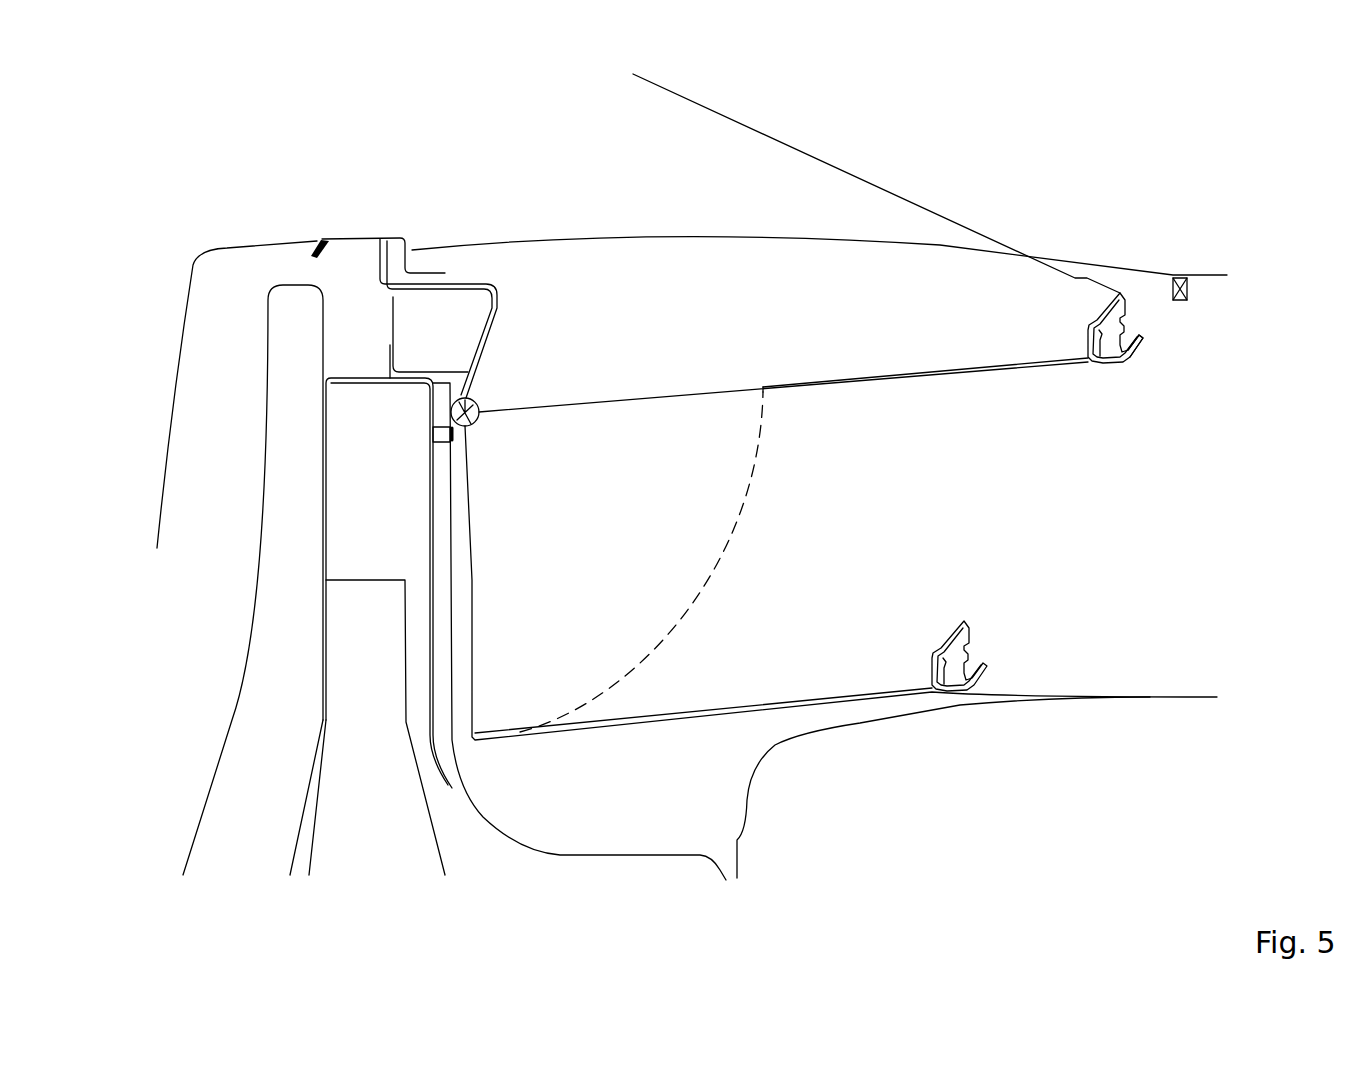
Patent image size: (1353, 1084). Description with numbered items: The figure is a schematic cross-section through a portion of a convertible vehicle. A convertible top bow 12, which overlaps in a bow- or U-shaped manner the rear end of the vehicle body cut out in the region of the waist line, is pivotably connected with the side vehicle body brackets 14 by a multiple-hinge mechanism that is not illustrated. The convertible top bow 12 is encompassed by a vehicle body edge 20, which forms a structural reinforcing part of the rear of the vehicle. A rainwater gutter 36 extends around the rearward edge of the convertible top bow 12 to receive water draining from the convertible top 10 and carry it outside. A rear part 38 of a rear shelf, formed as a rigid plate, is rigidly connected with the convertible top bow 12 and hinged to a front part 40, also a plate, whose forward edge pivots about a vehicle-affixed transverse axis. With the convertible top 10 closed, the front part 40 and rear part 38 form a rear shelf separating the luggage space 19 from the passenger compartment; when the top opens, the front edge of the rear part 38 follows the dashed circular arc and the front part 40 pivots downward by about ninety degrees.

The convertible top 10 is at (758, 132).
The convertible top bow 12 is at (1110, 335).
The side vehicle body bracket 14 is at (368, 437).
The luggage space 19 is at (1205, 528).
The vehicle body edge 20 is at (1193, 275).
The rainwater gutter 36 is at (1137, 347).
The rear part 38 is at (898, 382).
The front part 40 is at (594, 398).